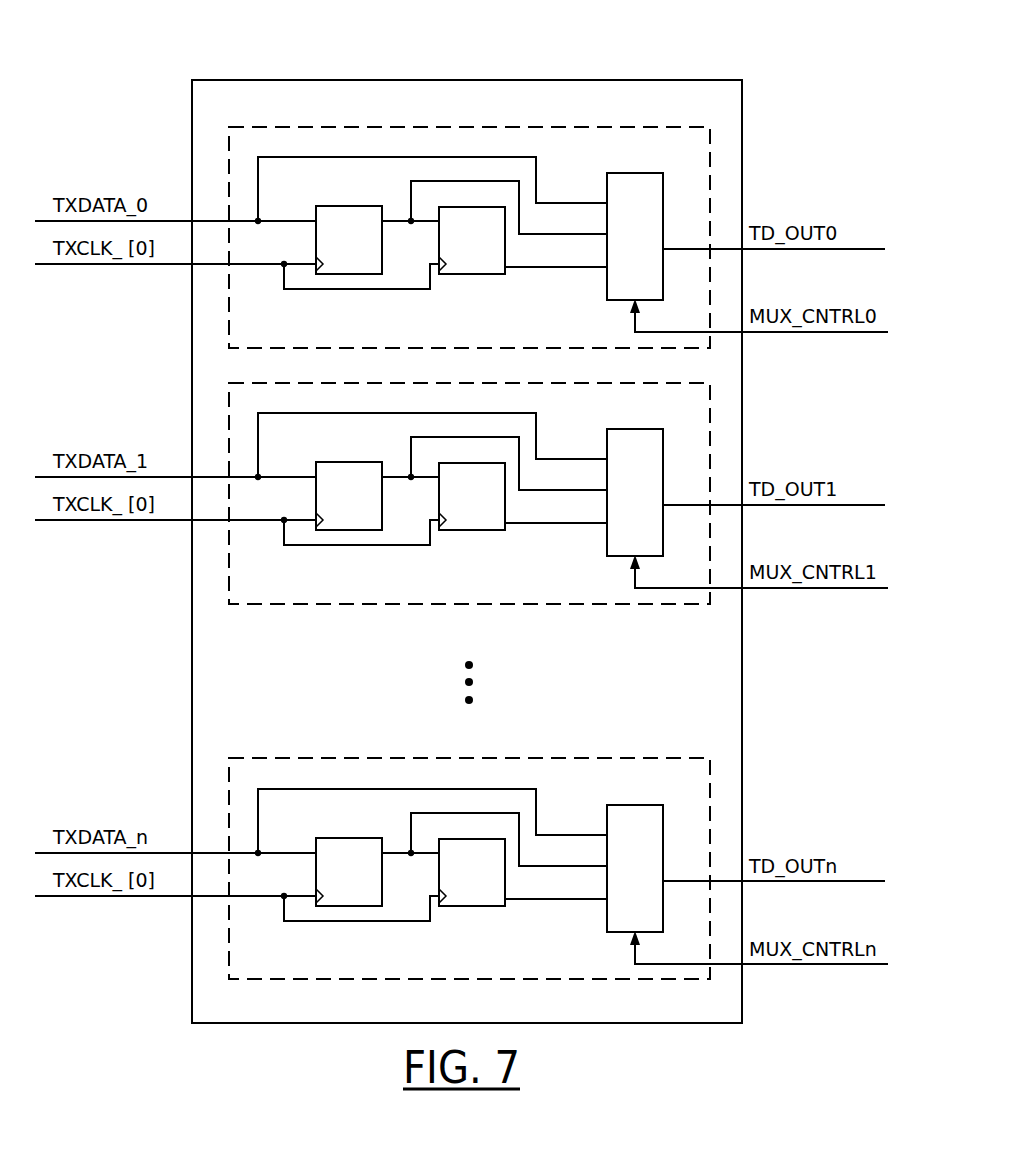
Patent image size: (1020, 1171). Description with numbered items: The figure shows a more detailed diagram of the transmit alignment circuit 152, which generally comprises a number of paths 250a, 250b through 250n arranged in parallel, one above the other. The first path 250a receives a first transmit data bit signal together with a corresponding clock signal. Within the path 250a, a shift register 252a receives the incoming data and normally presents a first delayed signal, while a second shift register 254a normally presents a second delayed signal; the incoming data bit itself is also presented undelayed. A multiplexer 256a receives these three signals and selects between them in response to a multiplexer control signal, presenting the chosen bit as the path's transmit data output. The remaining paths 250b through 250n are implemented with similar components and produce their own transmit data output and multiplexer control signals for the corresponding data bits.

The transmit alignment circuit 152 is at (271, 80).
The path 250a is at (459, 219).
The path 250b is at (310, 600).
The path 250n is at (318, 758).
The shift register 252a is at (352, 206).
The shift register 254a is at (458, 275).
The multiplexer 256a is at (648, 173).